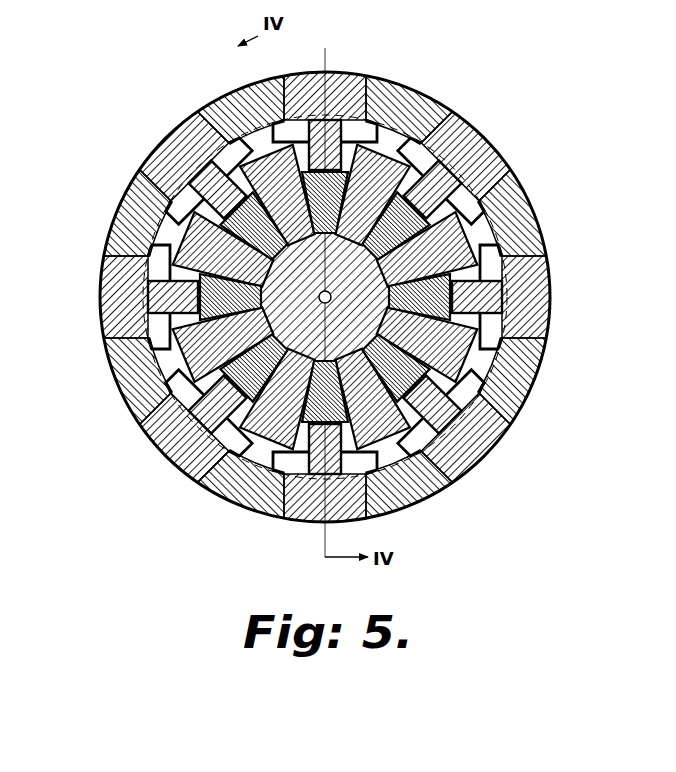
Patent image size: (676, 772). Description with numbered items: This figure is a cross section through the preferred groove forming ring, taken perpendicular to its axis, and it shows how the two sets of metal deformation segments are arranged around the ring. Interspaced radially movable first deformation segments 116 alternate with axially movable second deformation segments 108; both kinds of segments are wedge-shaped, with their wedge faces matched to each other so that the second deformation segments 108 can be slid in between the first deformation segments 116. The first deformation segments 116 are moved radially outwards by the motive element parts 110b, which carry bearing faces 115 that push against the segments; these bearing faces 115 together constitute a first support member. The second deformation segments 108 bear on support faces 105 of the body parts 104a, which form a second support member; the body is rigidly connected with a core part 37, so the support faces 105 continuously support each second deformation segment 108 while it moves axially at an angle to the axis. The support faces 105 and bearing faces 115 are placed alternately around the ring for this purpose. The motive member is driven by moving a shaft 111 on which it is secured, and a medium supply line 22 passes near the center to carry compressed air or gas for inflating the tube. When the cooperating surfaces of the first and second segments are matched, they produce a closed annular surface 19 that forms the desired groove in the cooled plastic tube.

The closed annular surface 19 is at (447, 122).
The medium supply line 22 is at (331, 293).
The core part 37 is at (165, 455).
The body part 104a is at (387, 157).
The support face 105 is at (527, 222).
The second deformation segment 108 is at (235, 85).
The motive element part 110b is at (500, 300).
The shaft 111 is at (530, 382).
The bearing face 115 is at (228, 205).
The first deformation segment 116 is at (342, 85).